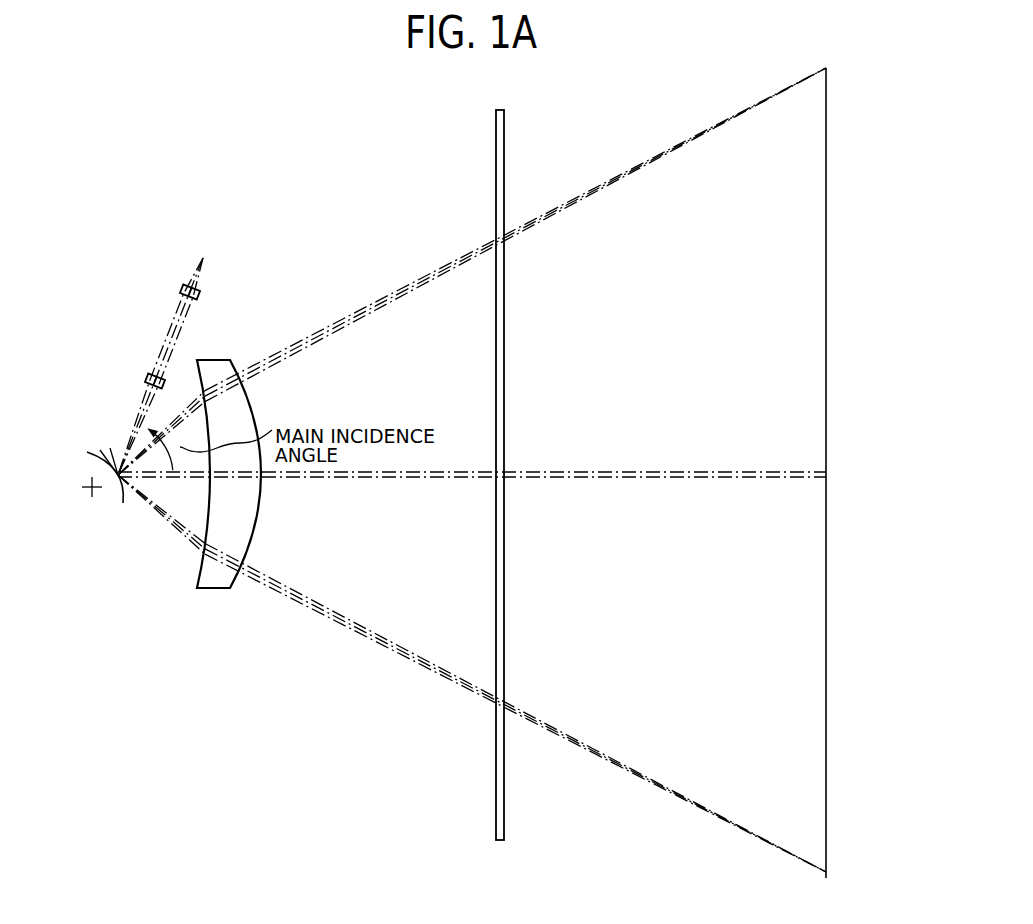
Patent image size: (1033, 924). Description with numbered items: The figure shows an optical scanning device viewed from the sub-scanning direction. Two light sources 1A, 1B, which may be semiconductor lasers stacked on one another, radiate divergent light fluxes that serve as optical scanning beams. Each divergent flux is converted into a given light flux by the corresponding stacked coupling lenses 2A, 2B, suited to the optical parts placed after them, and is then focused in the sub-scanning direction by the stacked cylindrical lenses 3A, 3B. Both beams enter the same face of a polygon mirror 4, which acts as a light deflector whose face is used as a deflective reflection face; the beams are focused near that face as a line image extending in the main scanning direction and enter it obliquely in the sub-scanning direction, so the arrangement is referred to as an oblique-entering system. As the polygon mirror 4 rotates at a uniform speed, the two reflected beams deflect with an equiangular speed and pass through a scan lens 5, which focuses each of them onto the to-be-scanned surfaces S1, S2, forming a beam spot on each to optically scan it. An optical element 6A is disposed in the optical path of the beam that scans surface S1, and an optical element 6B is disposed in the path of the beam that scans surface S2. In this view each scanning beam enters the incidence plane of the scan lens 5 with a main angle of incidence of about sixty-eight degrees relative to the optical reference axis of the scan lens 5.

The light source 1A is at (183, 350).
The light source 1B is at (204, 263).
The coupling lens 2A is at (145, 287).
The coupling lens 2B is at (180, 292).
The cylindrical lens 3A is at (111, 375).
The cylindrical lens 3B is at (147, 381).
The polygon mirror 4 is at (100, 505).
The scan lens 5 is at (217, 584).
The optical element 6A is at (547, 475).
The optical element 6B is at (504, 362).
The surface S1 is at (781, 473).
The surface S2 is at (826, 582).